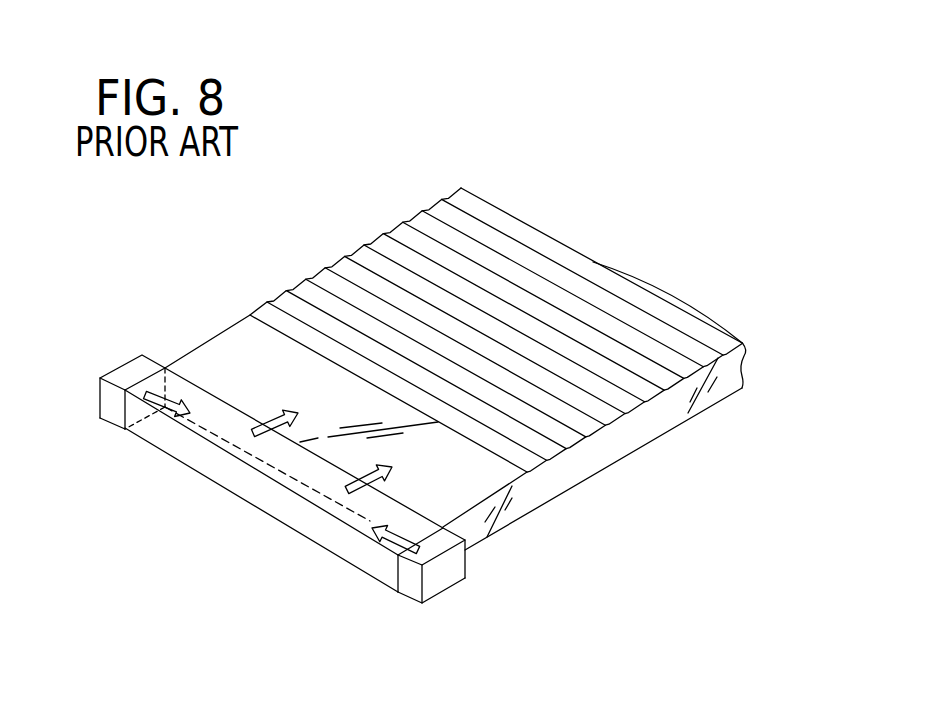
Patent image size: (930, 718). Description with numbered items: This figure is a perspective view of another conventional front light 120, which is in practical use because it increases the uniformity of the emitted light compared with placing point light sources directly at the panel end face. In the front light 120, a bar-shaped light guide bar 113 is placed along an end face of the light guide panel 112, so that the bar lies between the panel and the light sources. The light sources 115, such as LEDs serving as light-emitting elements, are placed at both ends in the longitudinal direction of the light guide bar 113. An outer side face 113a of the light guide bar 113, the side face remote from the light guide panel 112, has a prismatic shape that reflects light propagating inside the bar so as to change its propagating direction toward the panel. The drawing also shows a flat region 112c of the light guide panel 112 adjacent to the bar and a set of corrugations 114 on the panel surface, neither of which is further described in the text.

The front light 120 is at (588, 232).
The light guide panel 112 is at (670, 412).
The flat portion of plate 112c is at (228, 362).
The light guide bar 113 is at (198, 455).
The outer side face 113a is at (295, 512).
The corrugations / grooves 114 is at (363, 293).
The light sources 115 is at (113, 417).